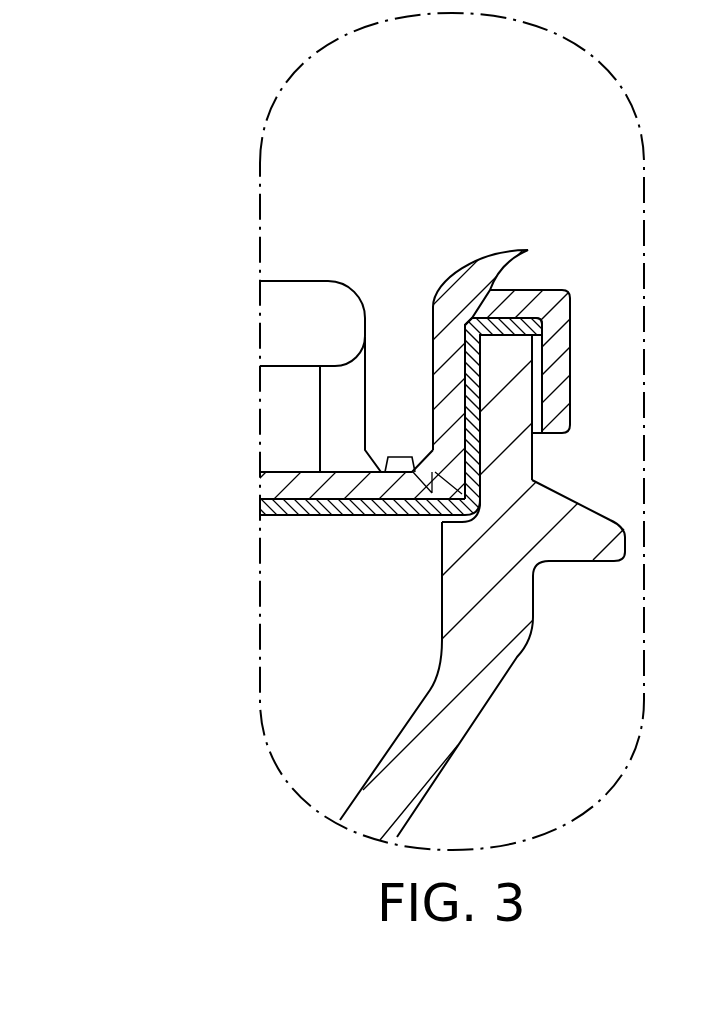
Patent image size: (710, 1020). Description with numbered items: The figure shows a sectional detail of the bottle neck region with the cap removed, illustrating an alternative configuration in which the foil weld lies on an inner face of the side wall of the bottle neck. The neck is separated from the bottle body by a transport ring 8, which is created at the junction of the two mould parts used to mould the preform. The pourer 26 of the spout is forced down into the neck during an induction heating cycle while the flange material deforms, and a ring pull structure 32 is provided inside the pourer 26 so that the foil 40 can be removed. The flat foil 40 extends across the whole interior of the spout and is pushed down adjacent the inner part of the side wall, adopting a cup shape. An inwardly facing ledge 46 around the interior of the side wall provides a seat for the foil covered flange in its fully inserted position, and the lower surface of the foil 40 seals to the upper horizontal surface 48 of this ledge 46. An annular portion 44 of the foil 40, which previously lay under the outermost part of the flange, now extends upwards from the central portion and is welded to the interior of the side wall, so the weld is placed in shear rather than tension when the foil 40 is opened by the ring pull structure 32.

The transport ring 8 is at (625, 554).
The pourer 26 is at (484, 272).
The ring pull structure 32 is at (276, 325).
The foil 40 is at (350, 517).
The annular portion of the foil 44 is at (480, 463).
The inwardly facing ledge 46 is at (455, 590).
The upper horizontal surface 48 is at (450, 523).